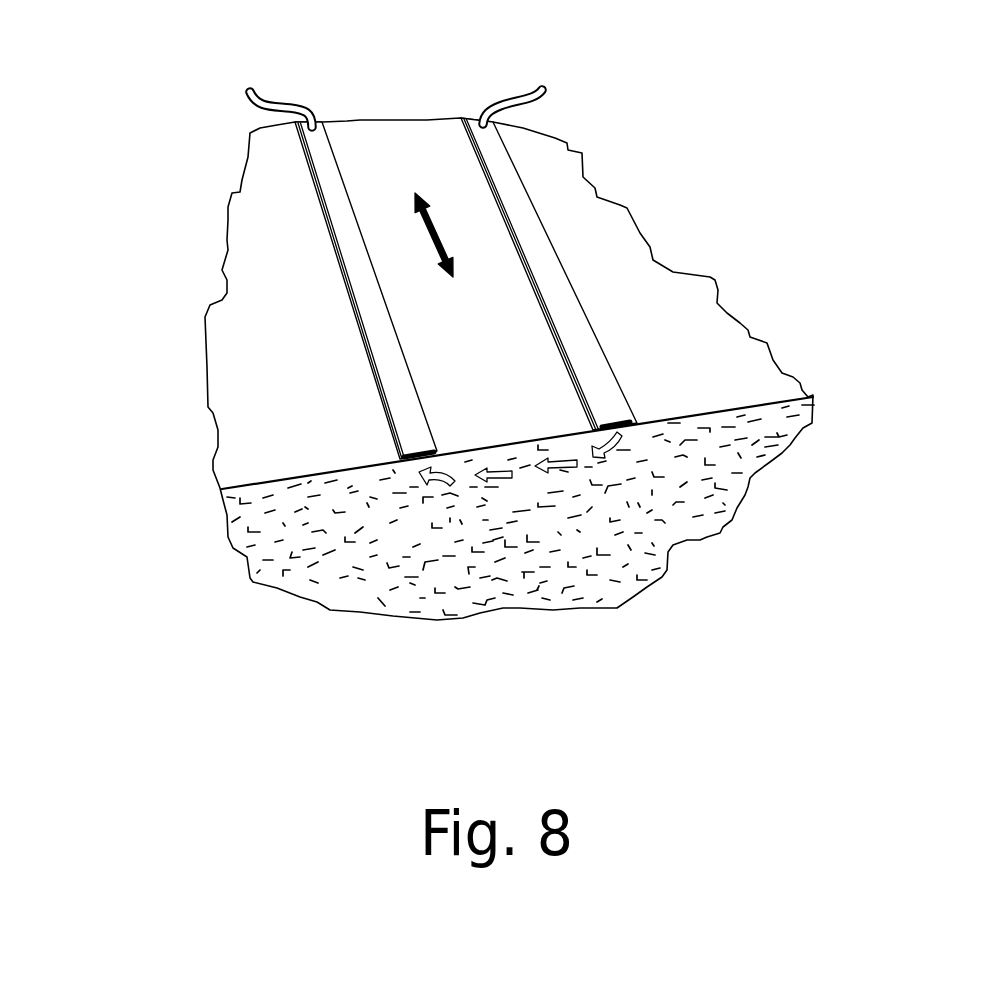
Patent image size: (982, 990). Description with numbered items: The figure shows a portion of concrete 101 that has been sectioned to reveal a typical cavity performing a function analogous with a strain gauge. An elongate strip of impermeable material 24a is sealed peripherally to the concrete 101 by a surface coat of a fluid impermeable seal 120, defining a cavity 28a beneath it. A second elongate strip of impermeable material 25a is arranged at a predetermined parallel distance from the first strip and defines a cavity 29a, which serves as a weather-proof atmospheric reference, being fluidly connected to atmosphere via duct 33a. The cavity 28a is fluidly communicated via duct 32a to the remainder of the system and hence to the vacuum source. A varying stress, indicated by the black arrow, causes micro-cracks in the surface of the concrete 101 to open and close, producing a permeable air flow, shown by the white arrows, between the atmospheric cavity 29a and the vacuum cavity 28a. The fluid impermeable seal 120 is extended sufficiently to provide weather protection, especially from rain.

The concrete 101 is at (210, 470).
The fluid impermeable seal 120 is at (338, 410).
The elongate strip of impermeable material 24a is at (251, 350).
The second elongate strip of impermeable material 25a is at (677, 308).
The cavity 28a is at (418, 457).
The cavity 29a is at (630, 430).
The duct 32a is at (277, 98).
The duct 33a is at (510, 97).